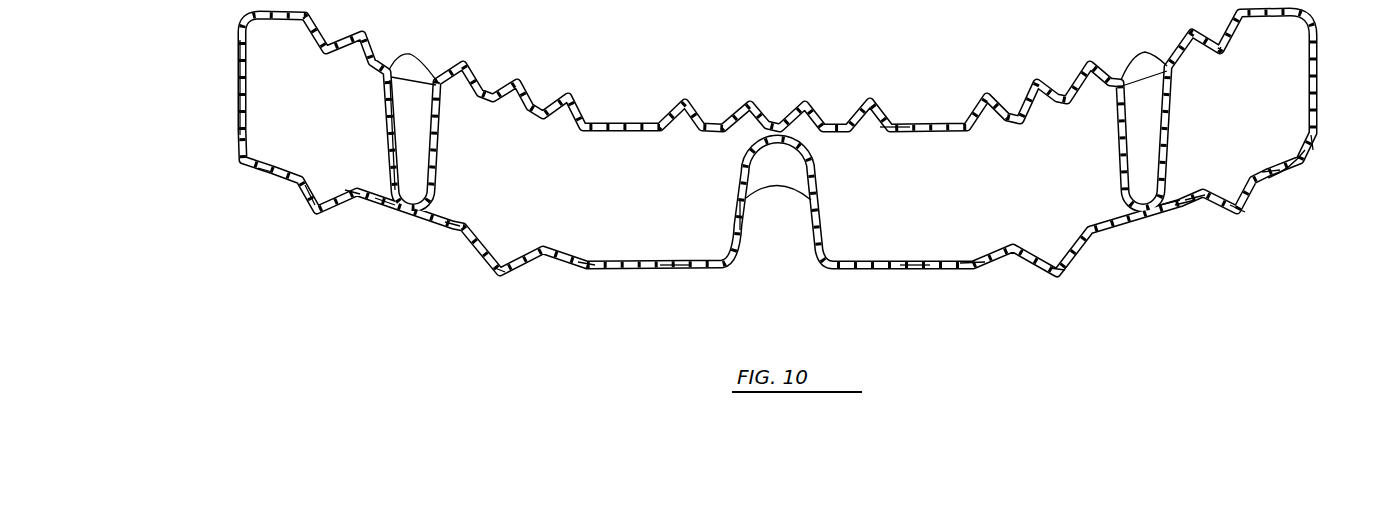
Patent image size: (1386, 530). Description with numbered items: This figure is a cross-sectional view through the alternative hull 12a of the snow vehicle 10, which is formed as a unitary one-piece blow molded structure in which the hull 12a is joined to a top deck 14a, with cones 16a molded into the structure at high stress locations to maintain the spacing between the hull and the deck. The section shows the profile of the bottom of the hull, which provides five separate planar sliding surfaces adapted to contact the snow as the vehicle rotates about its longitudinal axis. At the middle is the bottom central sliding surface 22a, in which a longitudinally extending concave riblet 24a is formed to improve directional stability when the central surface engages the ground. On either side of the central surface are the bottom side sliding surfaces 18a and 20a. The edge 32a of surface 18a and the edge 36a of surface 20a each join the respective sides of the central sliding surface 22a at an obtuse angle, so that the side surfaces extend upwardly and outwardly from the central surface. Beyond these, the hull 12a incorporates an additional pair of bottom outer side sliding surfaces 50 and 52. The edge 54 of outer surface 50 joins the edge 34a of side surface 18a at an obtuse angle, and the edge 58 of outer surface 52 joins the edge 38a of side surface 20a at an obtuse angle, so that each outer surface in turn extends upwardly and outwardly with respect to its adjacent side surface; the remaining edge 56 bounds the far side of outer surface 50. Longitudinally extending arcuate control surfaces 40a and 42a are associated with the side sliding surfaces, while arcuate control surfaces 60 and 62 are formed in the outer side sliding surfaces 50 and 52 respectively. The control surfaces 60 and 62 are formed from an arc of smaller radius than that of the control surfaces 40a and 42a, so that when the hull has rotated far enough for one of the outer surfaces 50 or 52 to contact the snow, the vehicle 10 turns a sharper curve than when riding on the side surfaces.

The snow vehicle 10 is at (777, 142).
The hull 12a is at (672, 266).
The top deck 14a is at (893, 123).
The cone 16a is at (388, 128).
The bottom side sliding surface 18a is at (455, 232).
The bottom side sliding surface 20a is at (1170, 208).
The bottom central sliding surface 22a is at (915, 268).
The concave riblet 24a is at (745, 225).
The edge 32a is at (585, 268).
The edge 34a is at (387, 208).
The edge 36a is at (970, 268).
The edge 38a is at (1185, 210).
The arcuate control surface 40a is at (503, 275).
The arcuate control surface 42a is at (1058, 275).
The bottom outer side sliding surface 50 is at (277, 177).
The bottom outer side sliding surface 52 is at (1275, 178).
The edge 54 is at (353, 195).
The edge 56 is at (238, 140).
The edge 58 is at (1195, 210).
The arcuate control surface 60 is at (313, 210).
The arcuate control surface 62 is at (1240, 214).